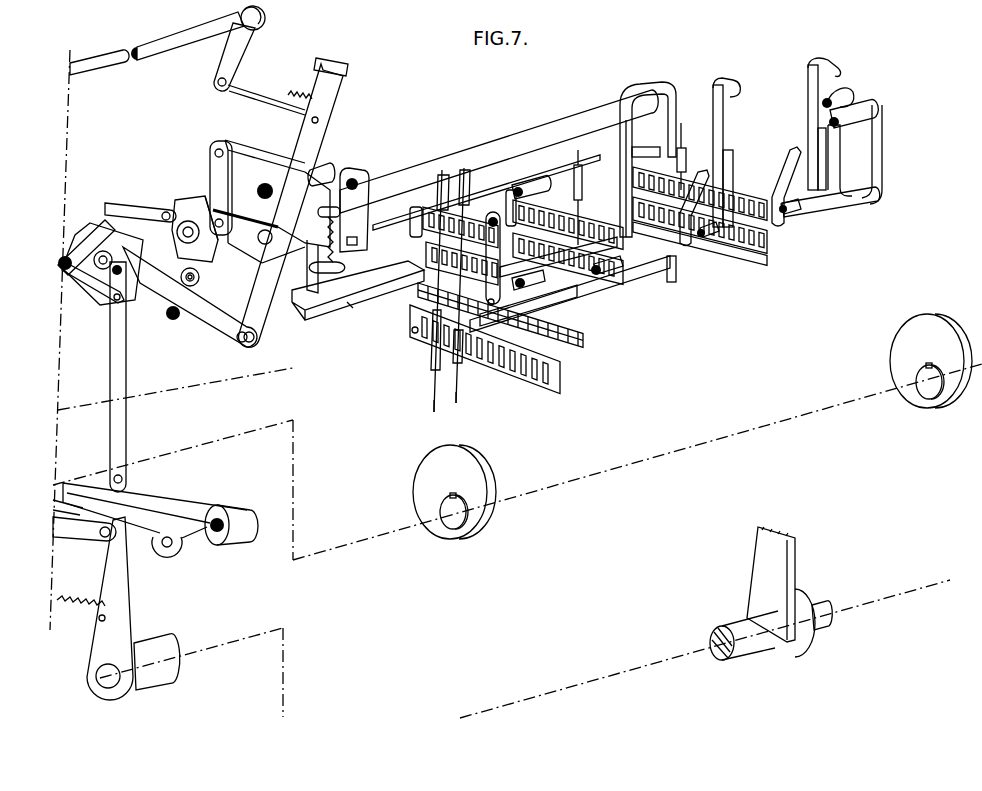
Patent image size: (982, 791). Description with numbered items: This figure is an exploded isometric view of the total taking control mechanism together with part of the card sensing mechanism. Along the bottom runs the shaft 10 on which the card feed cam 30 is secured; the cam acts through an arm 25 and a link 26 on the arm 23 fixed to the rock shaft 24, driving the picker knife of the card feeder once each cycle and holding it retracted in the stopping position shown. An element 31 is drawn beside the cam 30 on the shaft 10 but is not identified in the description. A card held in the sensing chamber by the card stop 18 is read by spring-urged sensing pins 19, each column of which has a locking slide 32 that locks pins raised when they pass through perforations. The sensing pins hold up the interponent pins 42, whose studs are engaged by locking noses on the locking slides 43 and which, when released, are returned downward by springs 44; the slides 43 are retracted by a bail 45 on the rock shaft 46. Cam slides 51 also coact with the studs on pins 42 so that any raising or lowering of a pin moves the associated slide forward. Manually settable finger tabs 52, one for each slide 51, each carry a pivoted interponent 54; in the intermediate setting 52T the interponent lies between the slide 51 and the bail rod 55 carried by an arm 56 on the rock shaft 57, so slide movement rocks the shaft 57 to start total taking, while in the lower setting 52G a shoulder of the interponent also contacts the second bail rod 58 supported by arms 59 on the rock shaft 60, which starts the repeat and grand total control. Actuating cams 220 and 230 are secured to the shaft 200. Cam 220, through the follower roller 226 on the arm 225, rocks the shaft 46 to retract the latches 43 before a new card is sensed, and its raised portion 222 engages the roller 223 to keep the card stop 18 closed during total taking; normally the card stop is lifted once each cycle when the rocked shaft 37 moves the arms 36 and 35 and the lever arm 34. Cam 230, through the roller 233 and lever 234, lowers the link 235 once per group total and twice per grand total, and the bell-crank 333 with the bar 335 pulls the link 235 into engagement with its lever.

The shaft 10 is at (777, 427).
The card stop 18 is at (385, 298).
The sensing pins 19 is at (434, 410).
The arm 23 is at (758, 567).
The rock shaft 24 is at (160, 650).
The arm 25 is at (125, 595).
The link 26 is at (75, 527).
The card feed cam 30 is at (950, 402).
The wheel 31 is at (482, 530).
The locking slide 32 is at (570, 360).
The lever arm 34 is at (240, 220).
The arm 35 is at (212, 172).
The arm 36 is at (258, 157).
The rock shaft 37 is at (106, 248).
The interponent pins 42 is at (464, 168).
The locking slides 43 is at (578, 293).
The springs 44 is at (672, 284).
The bail 45 is at (561, 179).
The rock shaft 46 is at (527, 130).
The cam slides 51 is at (596, 275).
The finger tabs 52 is at (648, 88).
The finger tab in intermediate position 52T is at (740, 84).
The finger tab in lower position 52G is at (835, 73).
The interponent member 54 is at (786, 178).
The bail rod 55 is at (840, 207).
The arm 56 is at (873, 173).
The rock shaft 57 is at (876, 120).
The second bail rod 58 is at (800, 213).
The arms 59 is at (515, 192).
The rock shaft 60 is at (545, 186).
The shaft 200 is at (183, 205).
The cam 220 is at (200, 270).
The raised portion 222 is at (204, 244).
The roller 223 is at (198, 284).
The arm 225 is at (120, 207).
The follower roller 226 is at (170, 207).
The cam 230 is at (93, 243).
The roller 233 is at (125, 310).
The lever 234 is at (197, 327).
The link 235 is at (258, 318).
The bell-crank 333 is at (192, 31).
The bar 335 is at (247, 88).